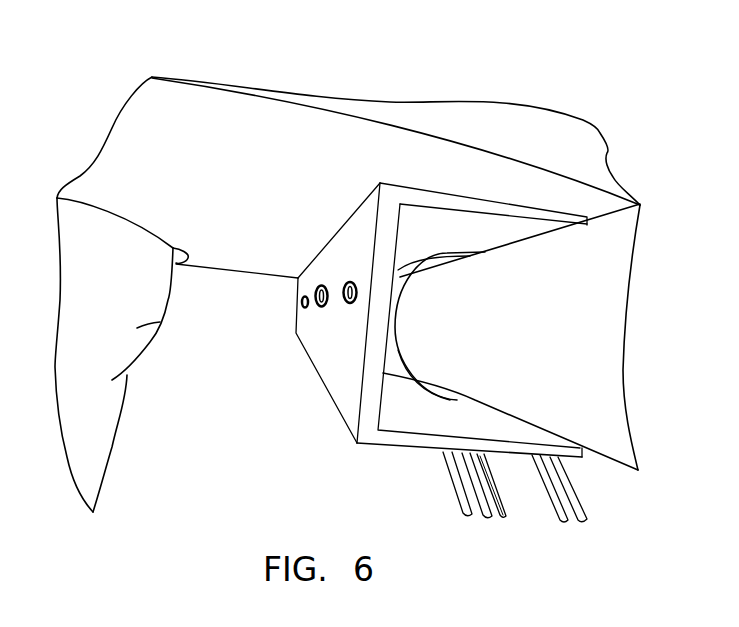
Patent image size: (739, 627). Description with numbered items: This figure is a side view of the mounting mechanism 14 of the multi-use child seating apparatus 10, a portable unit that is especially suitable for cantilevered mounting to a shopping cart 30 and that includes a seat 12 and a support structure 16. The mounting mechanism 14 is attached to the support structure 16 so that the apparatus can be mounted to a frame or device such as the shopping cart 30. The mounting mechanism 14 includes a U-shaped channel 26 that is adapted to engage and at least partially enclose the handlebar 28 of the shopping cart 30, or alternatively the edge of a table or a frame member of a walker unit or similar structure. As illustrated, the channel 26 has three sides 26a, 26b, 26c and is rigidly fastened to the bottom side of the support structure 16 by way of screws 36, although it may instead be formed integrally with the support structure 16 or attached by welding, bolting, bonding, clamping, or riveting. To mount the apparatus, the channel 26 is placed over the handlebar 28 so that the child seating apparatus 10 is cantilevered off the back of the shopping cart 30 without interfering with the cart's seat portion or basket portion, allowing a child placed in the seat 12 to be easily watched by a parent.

The multi-use child seating apparatus 10 is at (566, 88).
The seat 12 is at (126, 283).
The mounting mechanism 14 is at (254, 377).
The support structure 16 is at (514, 138).
The U-shaped channel 26 is at (338, 387).
The first side of channel 26a is at (440, 200).
The second side of channel 26b is at (360, 233).
The third side of channel 26c is at (420, 452).
The handlebar 28 is at (541, 315).
The shopping cart 30 is at (449, 486).
The screws 36 is at (343, 302).